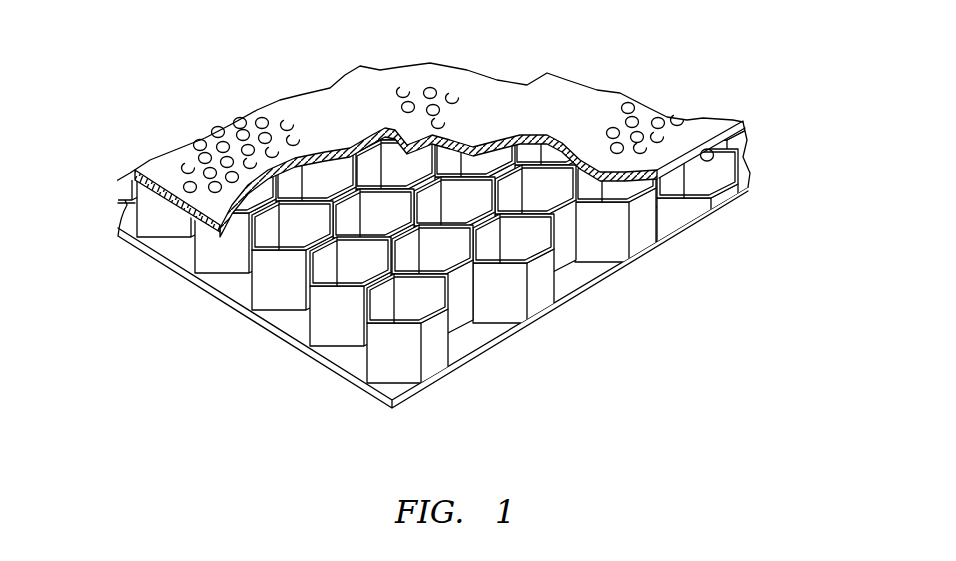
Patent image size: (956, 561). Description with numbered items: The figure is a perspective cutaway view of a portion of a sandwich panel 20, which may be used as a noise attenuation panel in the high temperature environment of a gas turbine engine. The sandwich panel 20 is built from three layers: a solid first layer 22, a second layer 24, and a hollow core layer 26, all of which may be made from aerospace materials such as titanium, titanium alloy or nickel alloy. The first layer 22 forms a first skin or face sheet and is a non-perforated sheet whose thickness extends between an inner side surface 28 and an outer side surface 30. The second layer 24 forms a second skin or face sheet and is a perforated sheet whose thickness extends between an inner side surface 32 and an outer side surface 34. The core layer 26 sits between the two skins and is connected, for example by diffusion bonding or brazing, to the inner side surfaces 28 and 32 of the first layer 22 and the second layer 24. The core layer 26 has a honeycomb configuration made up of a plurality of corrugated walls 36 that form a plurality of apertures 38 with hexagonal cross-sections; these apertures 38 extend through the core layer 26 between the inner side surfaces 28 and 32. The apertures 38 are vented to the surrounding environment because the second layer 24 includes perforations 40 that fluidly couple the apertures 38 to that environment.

The sandwich panel 20 is at (450, 234).
The first layer 22 is at (720, 208).
The second layer 24 is at (484, 123).
The core layer 26 is at (747, 150).
The inner side surface 28 is at (423, 238).
The outer side surface 30 is at (700, 227).
The inner side surface 32 is at (697, 150).
The outer side surface 34 is at (680, 150).
The corrugated walls 36 is at (360, 303).
The apertures 38 is at (541, 184).
The perforations 40 is at (448, 101).